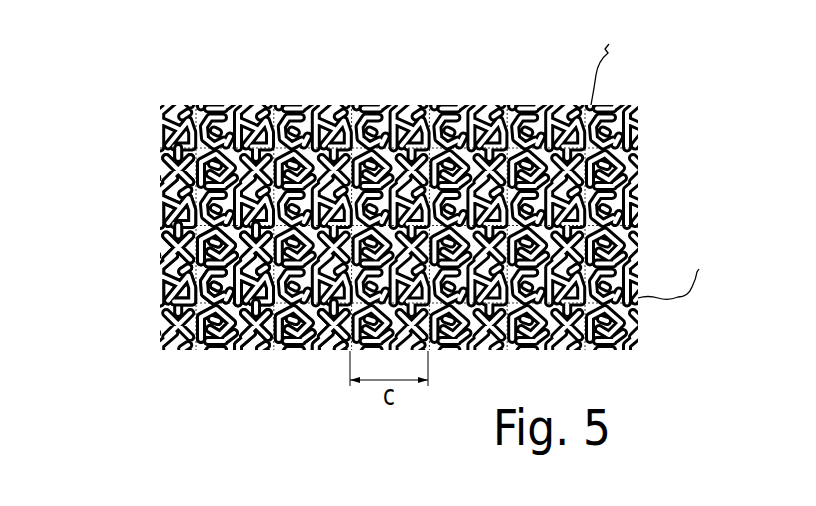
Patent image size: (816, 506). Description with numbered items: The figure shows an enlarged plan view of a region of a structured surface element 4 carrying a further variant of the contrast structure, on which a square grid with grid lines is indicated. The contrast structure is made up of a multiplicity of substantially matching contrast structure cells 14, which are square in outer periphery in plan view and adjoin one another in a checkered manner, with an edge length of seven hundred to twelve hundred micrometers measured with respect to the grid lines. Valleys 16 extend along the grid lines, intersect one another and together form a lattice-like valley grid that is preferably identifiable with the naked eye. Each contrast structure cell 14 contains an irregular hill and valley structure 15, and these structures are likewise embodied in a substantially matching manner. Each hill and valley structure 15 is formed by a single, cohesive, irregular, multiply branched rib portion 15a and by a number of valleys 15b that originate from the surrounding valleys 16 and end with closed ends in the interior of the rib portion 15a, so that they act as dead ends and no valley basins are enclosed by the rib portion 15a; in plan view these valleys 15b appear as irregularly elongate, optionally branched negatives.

The structured surface element 4 is at (631, 80).
The contrast structure cell 14 is at (152, 160).
The valley 16 is at (152, 218).
The hill and valley structure 15 is at (152, 255).
The rib portion 15a is at (278, 343).
The closed-ended valley 15b is at (230, 343).